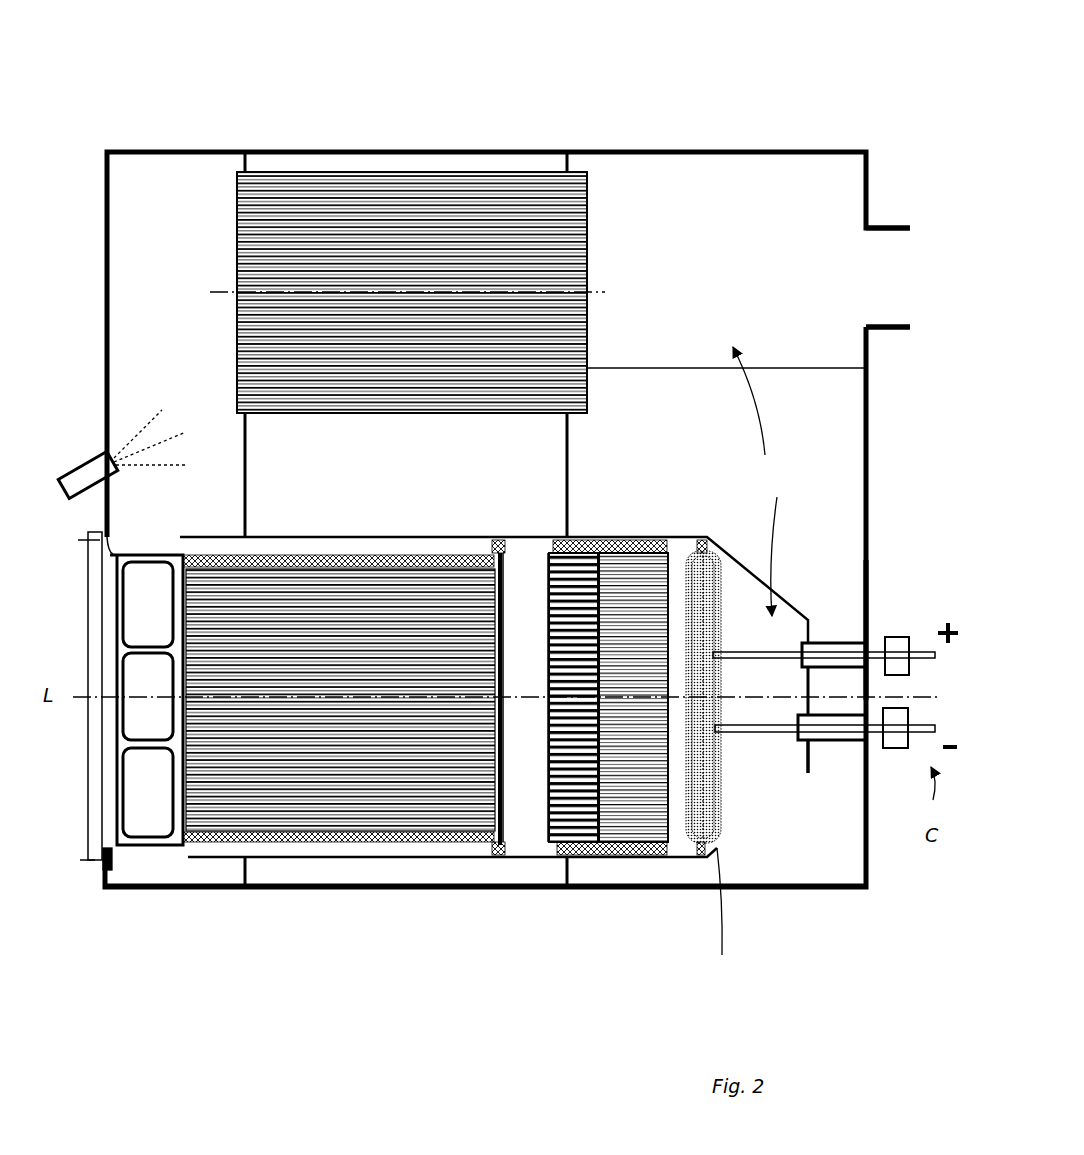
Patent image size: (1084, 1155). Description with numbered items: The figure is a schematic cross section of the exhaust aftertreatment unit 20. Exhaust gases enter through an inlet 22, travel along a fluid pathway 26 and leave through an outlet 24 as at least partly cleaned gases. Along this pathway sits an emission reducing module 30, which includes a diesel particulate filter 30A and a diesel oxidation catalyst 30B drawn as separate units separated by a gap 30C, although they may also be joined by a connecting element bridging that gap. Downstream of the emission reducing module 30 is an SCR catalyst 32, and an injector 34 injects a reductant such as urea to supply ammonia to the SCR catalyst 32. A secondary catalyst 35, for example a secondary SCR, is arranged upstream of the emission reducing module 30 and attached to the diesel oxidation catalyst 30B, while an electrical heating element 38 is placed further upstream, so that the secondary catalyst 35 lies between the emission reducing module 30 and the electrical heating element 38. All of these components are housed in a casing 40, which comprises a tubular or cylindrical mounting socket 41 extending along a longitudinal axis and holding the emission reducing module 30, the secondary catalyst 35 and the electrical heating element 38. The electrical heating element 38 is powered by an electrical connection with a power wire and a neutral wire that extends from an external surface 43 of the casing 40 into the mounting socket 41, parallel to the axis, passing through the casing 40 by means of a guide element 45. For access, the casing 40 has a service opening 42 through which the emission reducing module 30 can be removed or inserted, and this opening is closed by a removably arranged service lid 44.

The exhaust aftertreatment unit 20 is at (678, 82).
The inlet 22 is at (810, 773).
The outlet 24 is at (912, 331).
The fluid pathway 26 is at (759, 481).
The emission reducing module 30 is at (389, 721).
The diesel particulate filter 30A is at (348, 553).
The diesel oxidation catalyst 30B is at (590, 553).
The gap 30C is at (527, 560).
The SCR catalyst 32 is at (405, 172).
The injector 34 is at (80, 462).
The secondary catalyst 35 is at (617, 843).
The electrical heating element 38 is at (736, 800).
The casing 40 is at (315, 888).
The mounting socket 41 is at (375, 858).
The service opening 42 is at (110, 850).
The external surface 43 is at (868, 625).
The service lid 44 is at (88, 868).
The guide element 45 is at (839, 628).